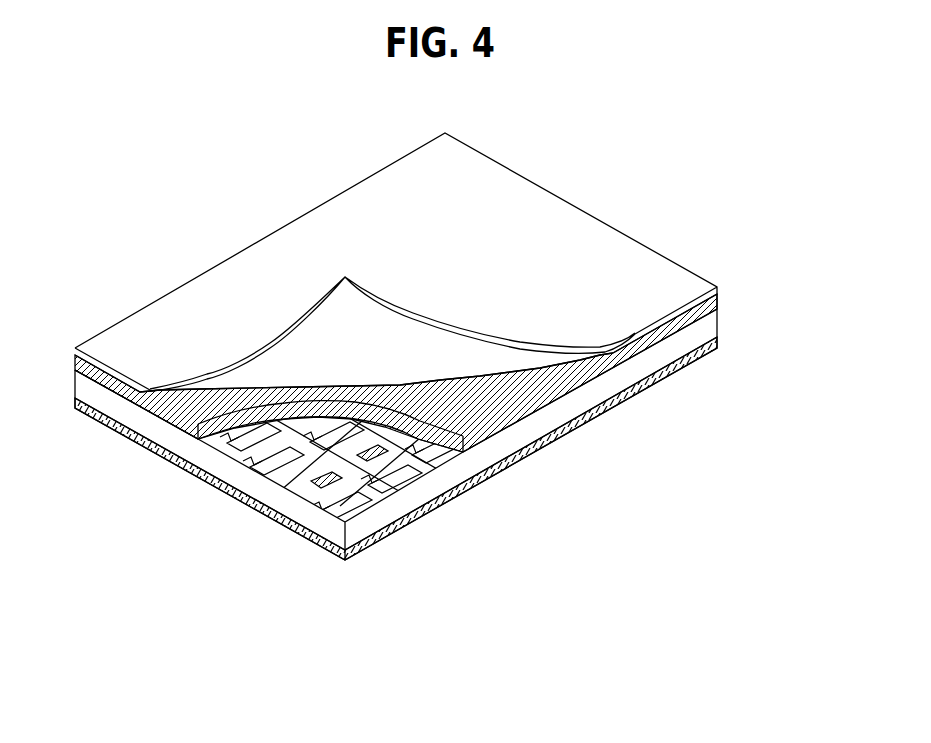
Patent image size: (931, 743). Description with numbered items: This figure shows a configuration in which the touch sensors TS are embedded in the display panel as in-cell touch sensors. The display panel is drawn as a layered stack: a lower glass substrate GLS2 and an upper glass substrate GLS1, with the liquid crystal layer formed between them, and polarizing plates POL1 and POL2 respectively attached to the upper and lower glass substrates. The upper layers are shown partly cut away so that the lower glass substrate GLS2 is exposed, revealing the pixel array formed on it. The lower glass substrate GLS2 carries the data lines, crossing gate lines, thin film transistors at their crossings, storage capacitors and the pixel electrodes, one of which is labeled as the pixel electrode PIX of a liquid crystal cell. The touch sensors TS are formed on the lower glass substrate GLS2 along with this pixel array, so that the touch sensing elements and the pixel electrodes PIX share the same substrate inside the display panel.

The polarizing plate POL1 is at (718, 287).
The upper glass substrate GLS1 is at (718, 303).
The lower glass substrate GLS2 is at (708, 325).
The polarizing plate POL2 is at (718, 345).
The touch sensor TS is at (318, 489).
The pixel electrode PIX is at (347, 512).